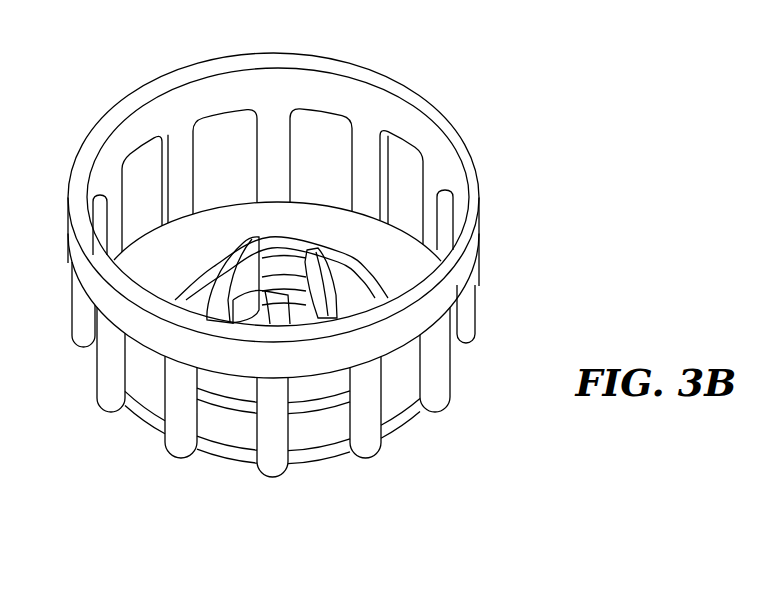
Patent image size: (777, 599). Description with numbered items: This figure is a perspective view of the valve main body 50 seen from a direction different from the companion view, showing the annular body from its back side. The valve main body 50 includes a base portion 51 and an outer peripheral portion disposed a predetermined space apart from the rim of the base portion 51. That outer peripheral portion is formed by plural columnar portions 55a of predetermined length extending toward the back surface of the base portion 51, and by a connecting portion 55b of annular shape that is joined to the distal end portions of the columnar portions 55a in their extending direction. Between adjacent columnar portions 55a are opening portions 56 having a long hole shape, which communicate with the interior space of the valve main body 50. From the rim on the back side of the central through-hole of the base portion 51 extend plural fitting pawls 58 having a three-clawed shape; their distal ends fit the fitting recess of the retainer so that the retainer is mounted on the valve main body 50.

The valve main body 50 is at (428, 92).
The base portion 51 is at (240, 437).
The columnar portions 55a is at (181, 160).
The connecting portion 55b is at (462, 150).
The opening portions 56 is at (225, 137).
The fitting pawls 58 is at (235, 255).